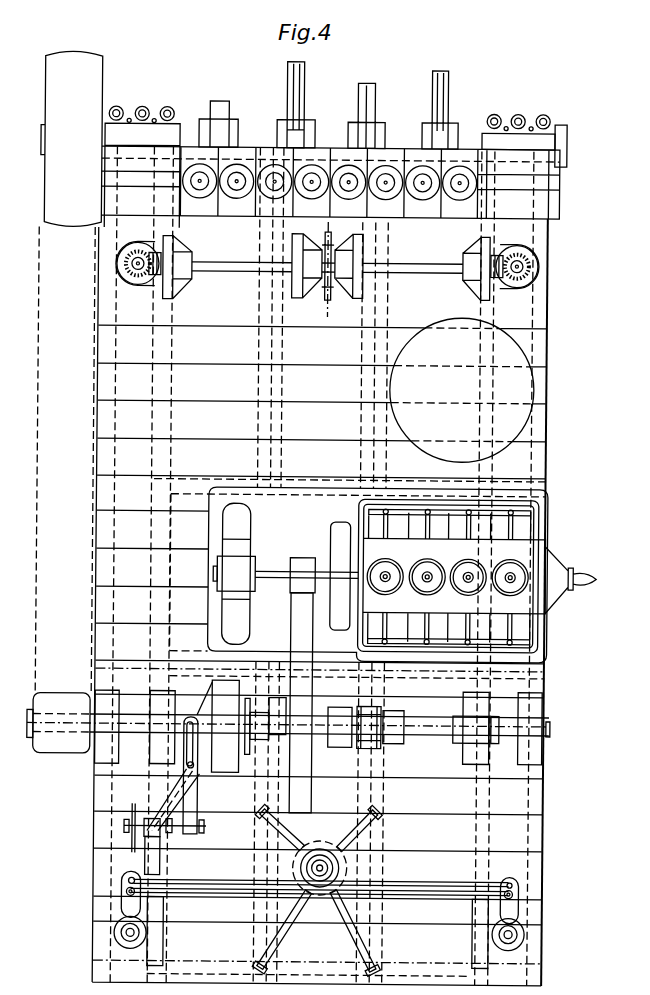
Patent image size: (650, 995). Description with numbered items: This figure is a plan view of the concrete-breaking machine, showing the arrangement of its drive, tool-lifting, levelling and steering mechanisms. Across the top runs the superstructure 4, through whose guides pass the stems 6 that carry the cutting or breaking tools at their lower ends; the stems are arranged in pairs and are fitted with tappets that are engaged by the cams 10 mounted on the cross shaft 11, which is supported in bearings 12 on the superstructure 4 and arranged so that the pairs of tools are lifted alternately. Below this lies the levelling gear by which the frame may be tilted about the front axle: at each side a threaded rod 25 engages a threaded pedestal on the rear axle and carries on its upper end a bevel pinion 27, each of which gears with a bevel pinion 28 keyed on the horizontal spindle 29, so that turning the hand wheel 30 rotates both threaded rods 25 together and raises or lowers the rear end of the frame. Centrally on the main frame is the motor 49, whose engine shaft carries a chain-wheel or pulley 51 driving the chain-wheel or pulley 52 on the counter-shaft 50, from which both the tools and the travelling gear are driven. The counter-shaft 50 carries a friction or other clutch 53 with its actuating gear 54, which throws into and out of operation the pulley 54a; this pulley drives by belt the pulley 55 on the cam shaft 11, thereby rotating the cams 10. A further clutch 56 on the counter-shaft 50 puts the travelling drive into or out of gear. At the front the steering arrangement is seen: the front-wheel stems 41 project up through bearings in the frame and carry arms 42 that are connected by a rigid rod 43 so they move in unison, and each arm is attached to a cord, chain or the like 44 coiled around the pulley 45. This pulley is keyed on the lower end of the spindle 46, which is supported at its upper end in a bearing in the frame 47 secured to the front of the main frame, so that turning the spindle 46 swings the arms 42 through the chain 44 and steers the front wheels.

The superstructure 4 is at (560, 186).
The stems 6 is at (264, 196).
The cams 10 is at (300, 94).
The cross shaft 11 is at (574, 149).
The bearings 12 is at (518, 117).
The threaded rod 25 is at (489, 249).
The bevel pinion 27 is at (530, 258).
The bevel pinion 28 is at (524, 286).
The horizontal spindle 29 is at (223, 273).
The hand wheel 30 is at (326, 303).
The stems 41 is at (531, 938).
The arms 42 is at (523, 903).
The rigid rod 43 is at (202, 892).
The cord, chain or the like 44 is at (182, 885).
The pulley 45 is at (347, 866).
The spindle 46 is at (307, 868).
The frame 47 is at (365, 946).
The motor 49 is at (522, 603).
The counter-shaft 50 is at (547, 721).
The chain-wheel or pulley 51 is at (301, 560).
The chain-wheel or pulley 52 is at (296, 642).
The friction or other clutch 53 is at (200, 742).
The actuating gear 54 is at (132, 816).
The pulley 54a is at (54, 753).
The pulley 55 is at (71, 139).
The clutch 56 is at (359, 748).